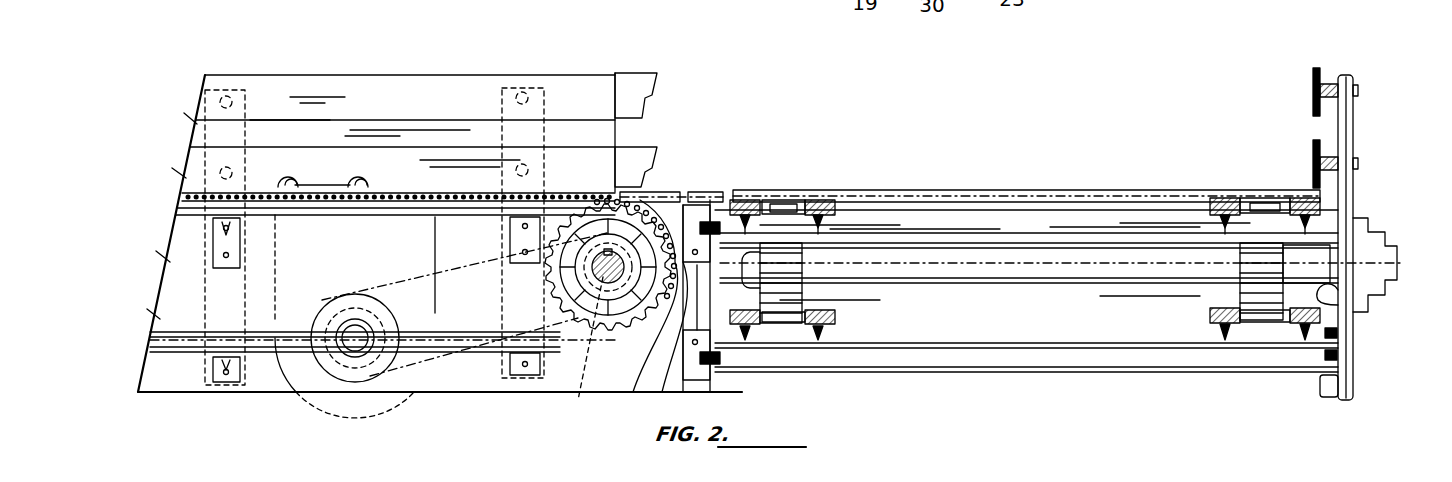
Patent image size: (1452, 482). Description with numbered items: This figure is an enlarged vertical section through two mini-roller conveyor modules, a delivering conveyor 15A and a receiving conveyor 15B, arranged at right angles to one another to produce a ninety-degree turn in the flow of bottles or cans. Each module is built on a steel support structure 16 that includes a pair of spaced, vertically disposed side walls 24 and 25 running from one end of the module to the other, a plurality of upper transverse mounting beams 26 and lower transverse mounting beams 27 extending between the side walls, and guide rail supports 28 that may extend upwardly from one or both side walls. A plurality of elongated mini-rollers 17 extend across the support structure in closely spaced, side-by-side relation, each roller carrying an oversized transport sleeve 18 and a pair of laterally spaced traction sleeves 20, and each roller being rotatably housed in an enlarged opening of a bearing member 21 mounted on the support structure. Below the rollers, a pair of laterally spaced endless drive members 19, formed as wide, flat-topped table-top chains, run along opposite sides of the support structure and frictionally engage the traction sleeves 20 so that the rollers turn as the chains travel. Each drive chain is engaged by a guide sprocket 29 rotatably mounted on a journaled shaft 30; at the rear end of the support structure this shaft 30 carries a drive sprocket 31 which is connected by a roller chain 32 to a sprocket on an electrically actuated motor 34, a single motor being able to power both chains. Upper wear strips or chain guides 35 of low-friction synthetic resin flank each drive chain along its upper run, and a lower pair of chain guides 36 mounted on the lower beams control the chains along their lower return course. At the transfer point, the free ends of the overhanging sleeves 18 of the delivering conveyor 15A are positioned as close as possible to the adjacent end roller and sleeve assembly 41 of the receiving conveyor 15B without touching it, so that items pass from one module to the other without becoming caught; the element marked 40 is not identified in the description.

The delivering conveyor module 15A is at (1350, 58).
The receiving conveyor module 15B is at (123, 158).
The support structure 16 is at (168, 281).
The mini-rollers 17 is at (287, 182).
The transport sleeve 18 is at (353, 186).
The endless drive members 19 is at (352, 204).
The traction sleeves 20 is at (791, 198).
The bearing members 21 is at (685, 192).
The side wall 24 is at (1350, 316).
The side wall 25 is at (756, 300).
The upper transverse mounting beam 26 is at (220, 258).
The lower transverse mounting beam 27 is at (215, 380).
The guide rail supports 28 is at (212, 132).
The guide sprocket 29 is at (615, 325).
The journaled shaft 30 is at (566, 300).
The drive sprocket 31 is at (581, 349).
The roller chain 32 is at (432, 352).
The electrically actuated motor 34 is at (362, 420).
The upper chain guides 35 is at (266, 412).
The lower chain guides 36 is at (1237, 336).
The end plate 40 is at (606, 192).
The end roller and sleeve assembly 41 is at (462, 112).